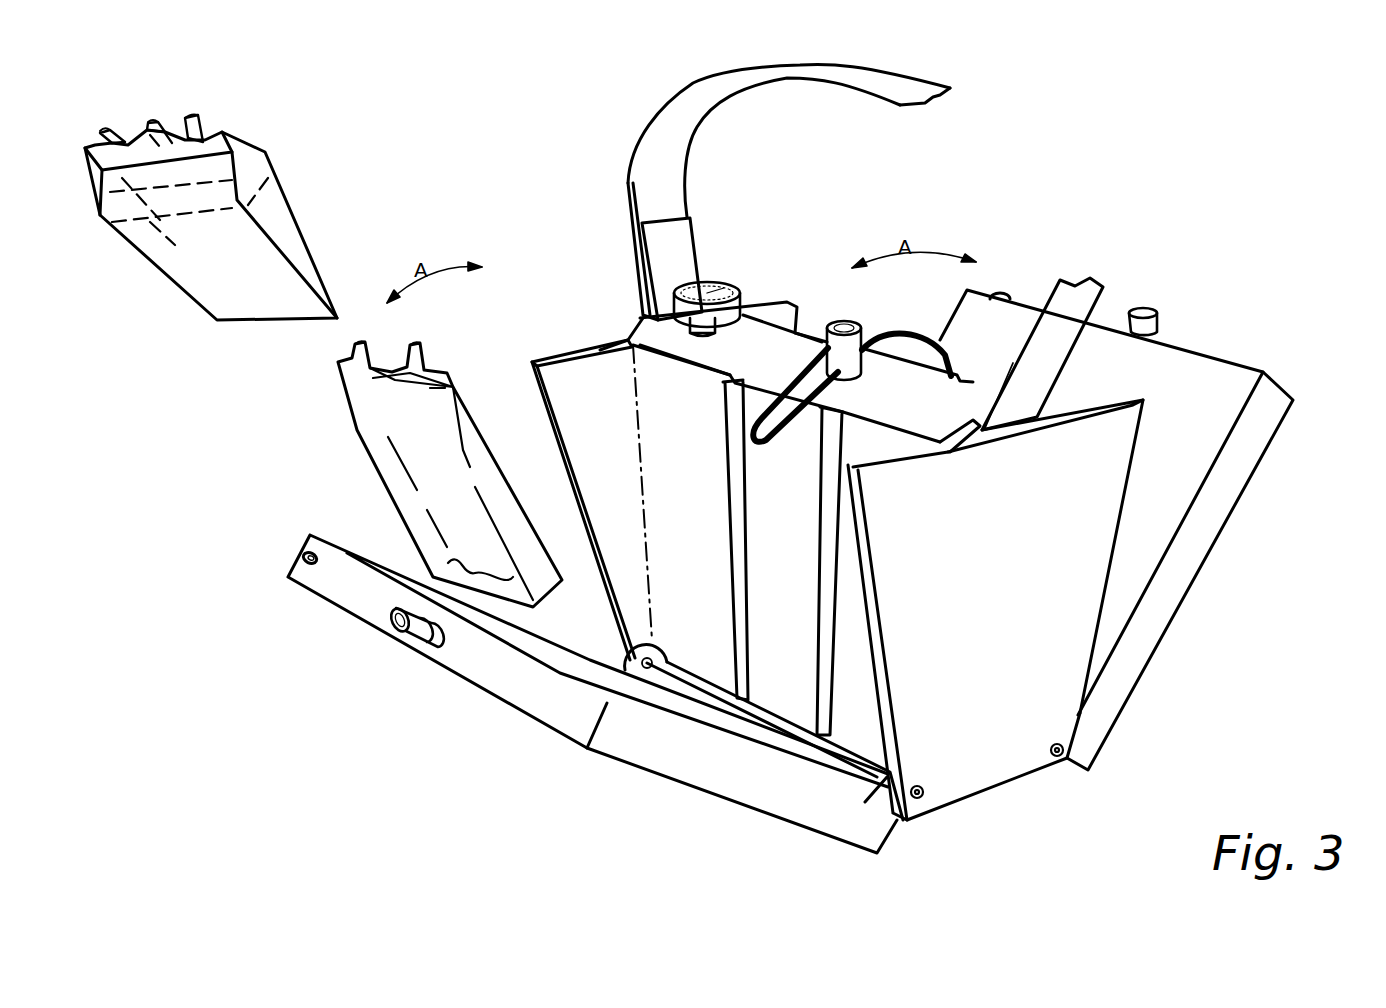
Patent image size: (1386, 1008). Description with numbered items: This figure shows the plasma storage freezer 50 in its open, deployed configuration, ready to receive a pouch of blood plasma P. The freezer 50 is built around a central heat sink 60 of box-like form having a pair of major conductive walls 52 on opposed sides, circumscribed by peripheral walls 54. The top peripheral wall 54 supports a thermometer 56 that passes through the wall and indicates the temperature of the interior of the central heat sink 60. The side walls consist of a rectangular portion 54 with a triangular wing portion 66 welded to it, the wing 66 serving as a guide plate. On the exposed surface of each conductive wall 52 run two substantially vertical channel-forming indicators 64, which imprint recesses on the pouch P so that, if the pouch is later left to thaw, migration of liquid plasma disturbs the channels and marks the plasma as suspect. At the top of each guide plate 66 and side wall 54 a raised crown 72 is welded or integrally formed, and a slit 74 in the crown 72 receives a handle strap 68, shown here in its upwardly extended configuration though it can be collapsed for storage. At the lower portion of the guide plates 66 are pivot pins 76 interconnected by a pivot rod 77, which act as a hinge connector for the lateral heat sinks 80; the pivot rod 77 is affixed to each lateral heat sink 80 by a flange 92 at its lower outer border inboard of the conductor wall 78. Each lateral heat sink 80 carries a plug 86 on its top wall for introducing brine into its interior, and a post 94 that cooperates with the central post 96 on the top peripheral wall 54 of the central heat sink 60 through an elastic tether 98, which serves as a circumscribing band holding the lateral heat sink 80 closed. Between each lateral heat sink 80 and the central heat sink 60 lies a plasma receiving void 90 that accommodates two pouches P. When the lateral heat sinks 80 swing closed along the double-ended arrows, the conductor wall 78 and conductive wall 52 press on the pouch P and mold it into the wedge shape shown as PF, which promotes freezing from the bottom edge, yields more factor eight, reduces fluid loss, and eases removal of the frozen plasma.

The freezer 50 is at (1172, 237).
The major conductive walls 52 is at (700, 545).
The peripheral walls 54 is at (930, 410).
The thermometer 56 is at (727, 307).
The central heat sink 60 is at (1005, 740).
The channel-forming indicators 64 is at (823, 647).
The triangular wing portion 66 is at (606, 415).
The handle strap 68 is at (645, 182).
The raised crown 72 is at (637, 327).
The slit 74 is at (1035, 425).
The pivot pins 76 is at (922, 797).
The pivot rod 77 is at (692, 683).
The conductor wall 78 is at (1190, 453).
The lateral heat sink 80 is at (690, 807).
The plug 86 is at (1007, 295).
The plasma receiving void 90 is at (510, 390).
The flange 92 is at (640, 680).
The posts 94 is at (1160, 322).
The central post 96 is at (863, 327).
The elastic tether 98 is at (897, 337).
The pouch of blood plasma P is at (390, 470).
The wedge-shaped frozen pouch PF is at (268, 210).